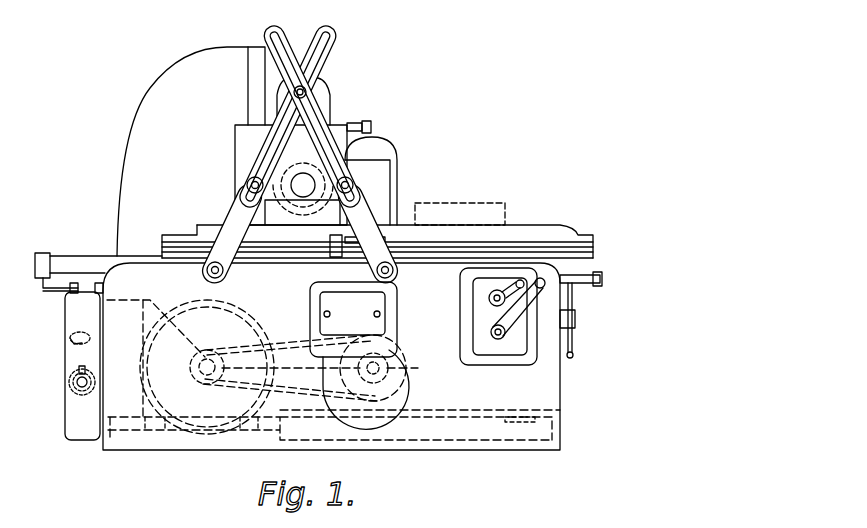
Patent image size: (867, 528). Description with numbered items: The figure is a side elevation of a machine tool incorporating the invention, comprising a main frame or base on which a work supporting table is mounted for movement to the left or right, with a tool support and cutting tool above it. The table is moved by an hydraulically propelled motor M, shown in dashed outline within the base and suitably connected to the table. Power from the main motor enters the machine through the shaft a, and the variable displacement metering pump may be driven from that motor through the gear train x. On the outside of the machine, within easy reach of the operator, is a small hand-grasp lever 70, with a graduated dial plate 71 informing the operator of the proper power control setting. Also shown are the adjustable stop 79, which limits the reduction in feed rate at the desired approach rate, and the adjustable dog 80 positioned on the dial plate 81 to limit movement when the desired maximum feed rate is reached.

The hand-grasp lever 70 is at (86, 327).
The graduated dial plate 71 is at (68, 337).
The adjustable stop 79 is at (82, 366).
The adjustable dog 80 is at (89, 358).
The dial plate 81 is at (70, 387).
The hydraulically propelled motor M is at (150, 396).
The shaft a is at (205, 369).
The gear train x is at (402, 371).